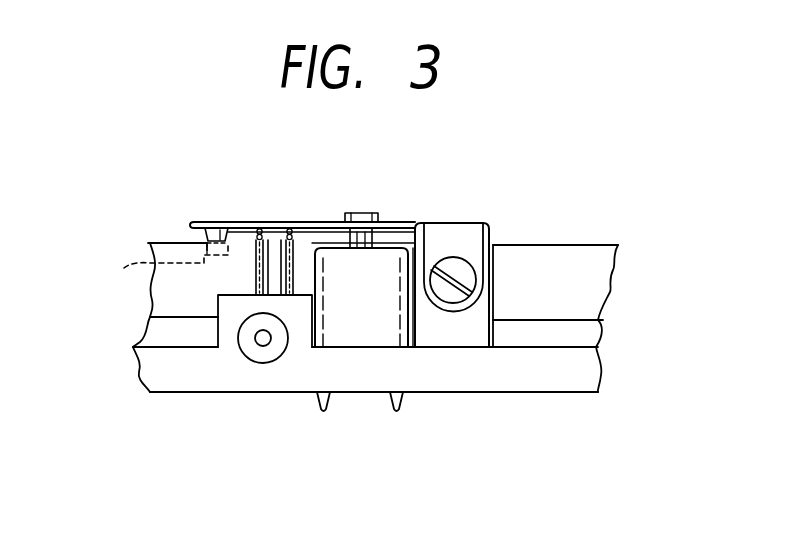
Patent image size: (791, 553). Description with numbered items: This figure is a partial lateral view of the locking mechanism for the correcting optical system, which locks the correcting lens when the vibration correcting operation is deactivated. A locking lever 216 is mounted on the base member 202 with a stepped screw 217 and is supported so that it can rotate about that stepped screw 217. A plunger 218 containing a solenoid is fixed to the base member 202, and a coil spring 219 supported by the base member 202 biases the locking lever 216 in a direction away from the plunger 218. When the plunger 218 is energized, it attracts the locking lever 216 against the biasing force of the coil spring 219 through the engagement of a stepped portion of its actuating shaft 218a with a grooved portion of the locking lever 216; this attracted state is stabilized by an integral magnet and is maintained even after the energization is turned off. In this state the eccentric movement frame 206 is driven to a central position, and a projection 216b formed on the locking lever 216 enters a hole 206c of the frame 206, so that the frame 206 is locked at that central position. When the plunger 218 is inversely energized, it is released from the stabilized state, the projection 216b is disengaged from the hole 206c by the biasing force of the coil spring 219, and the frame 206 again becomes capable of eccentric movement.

The base member 202 is at (217, 392).
The eccentric movement frame 206 is at (190, 241).
The hole 206c is at (143, 268).
The locking lever 216 is at (238, 222).
The projection 216b is at (205, 235).
The stepped screw 217 is at (453, 258).
The plunger 218 is at (378, 340).
The actuating shaft 218a is at (362, 213).
The coil spring 219 is at (303, 250).